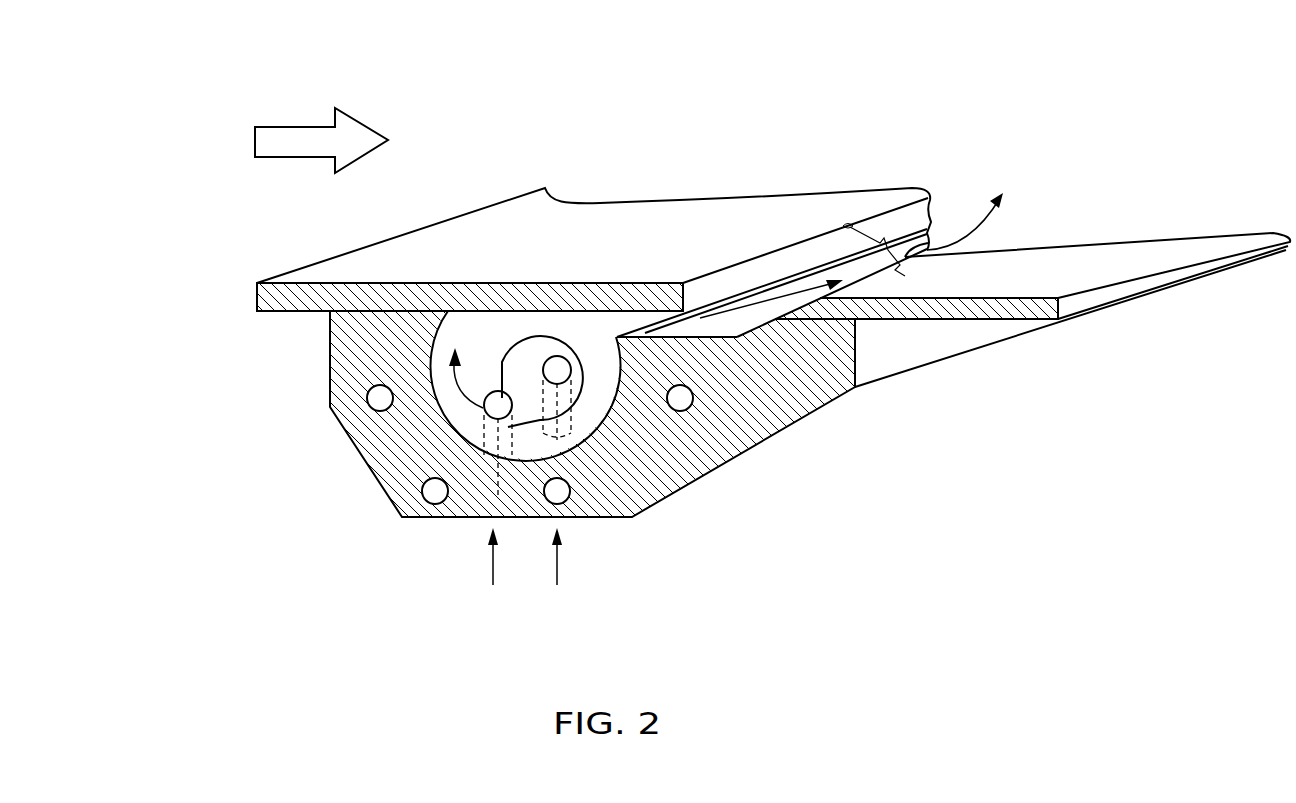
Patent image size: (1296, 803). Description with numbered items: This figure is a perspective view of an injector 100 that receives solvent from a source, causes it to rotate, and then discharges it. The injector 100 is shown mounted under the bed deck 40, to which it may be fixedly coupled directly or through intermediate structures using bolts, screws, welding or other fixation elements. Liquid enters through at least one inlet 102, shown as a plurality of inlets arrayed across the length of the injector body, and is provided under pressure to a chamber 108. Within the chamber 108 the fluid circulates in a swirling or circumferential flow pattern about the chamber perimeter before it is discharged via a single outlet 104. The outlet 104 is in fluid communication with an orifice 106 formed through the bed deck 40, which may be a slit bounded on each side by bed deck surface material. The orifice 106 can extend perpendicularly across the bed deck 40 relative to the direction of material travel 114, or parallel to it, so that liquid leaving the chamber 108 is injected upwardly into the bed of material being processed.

The injector 100 is at (158, 293).
The direction of material travel 114 is at (292, 158).
The bed deck 40 is at (465, 240).
The inlet 102 is at (483, 407).
The outlet 104 is at (597, 326).
The orifice 106 is at (850, 226).
The chamber 108 is at (480, 360).